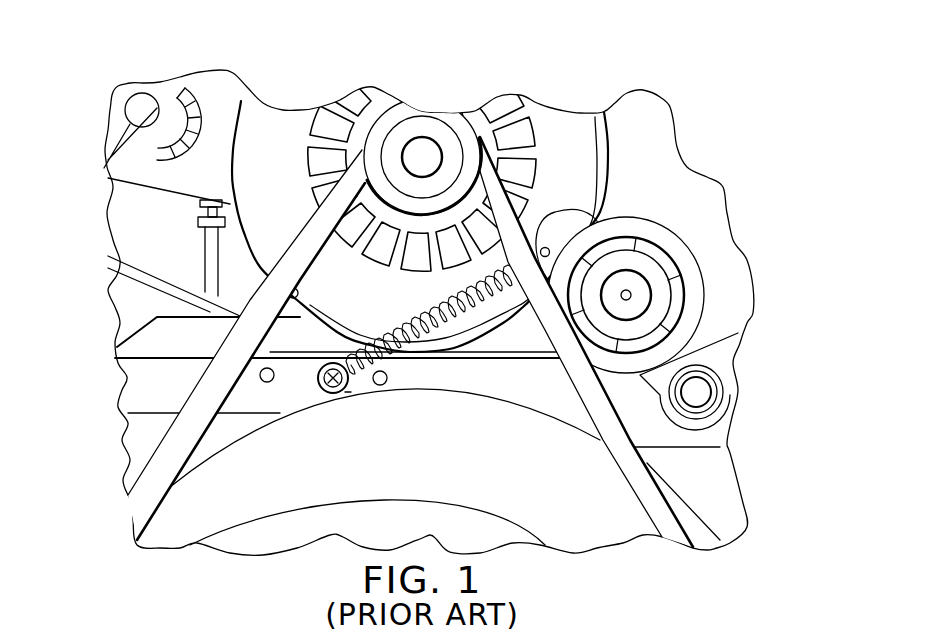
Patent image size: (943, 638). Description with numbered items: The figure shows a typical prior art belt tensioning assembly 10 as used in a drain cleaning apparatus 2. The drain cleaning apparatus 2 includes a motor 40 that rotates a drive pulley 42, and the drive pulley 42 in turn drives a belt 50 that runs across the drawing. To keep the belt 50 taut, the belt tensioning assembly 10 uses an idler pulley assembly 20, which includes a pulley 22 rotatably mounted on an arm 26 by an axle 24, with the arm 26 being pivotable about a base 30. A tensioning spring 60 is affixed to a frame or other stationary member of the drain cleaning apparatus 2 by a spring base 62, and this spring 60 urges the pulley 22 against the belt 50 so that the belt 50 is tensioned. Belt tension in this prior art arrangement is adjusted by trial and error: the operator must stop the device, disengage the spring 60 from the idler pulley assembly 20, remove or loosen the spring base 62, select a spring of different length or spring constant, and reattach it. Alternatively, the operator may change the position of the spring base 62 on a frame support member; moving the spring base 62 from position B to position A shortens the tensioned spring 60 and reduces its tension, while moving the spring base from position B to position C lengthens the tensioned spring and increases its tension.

The drain cleaning apparatus 2 is at (111, 88).
The belt tensioning assembly 10 is at (681, 181).
The idler pulley assembly 20 is at (723, 290).
The pulley 22 is at (618, 228).
The axle 24 is at (640, 282).
The arm 26 is at (678, 363).
The base 30 is at (700, 392).
The motor 40 is at (273, 130).
The drive pulley 42 is at (402, 136).
The belt 50 is at (505, 213).
The tensioning spring 60 is at (400, 352).
The spring base 62 is at (333, 394).
The position A is at (381, 386).
The position B is at (348, 392).
The position C is at (263, 380).